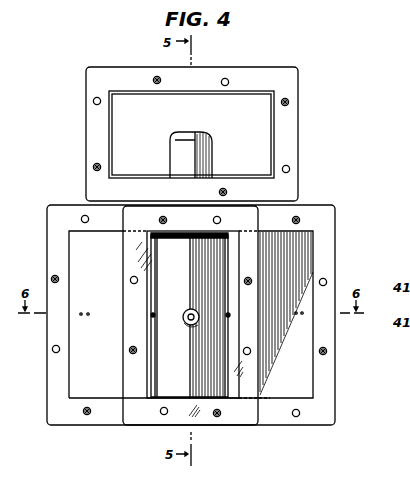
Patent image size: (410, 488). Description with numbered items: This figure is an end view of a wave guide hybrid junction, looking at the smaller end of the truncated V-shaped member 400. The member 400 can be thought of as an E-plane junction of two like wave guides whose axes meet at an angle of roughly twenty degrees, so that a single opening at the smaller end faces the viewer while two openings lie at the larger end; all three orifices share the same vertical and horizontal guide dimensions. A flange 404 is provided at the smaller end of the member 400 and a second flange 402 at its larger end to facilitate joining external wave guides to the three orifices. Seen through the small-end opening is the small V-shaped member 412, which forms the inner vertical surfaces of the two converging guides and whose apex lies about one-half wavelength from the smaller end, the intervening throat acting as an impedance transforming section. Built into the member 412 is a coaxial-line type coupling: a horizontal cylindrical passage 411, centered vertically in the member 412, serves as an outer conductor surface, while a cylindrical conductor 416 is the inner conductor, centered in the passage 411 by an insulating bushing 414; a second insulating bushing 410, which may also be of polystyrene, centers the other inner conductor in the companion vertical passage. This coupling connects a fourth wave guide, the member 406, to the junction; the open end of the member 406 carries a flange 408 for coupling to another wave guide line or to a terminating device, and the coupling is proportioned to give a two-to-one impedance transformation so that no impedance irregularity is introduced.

The truncated V-shaped member 400 is at (303, 243).
The second flange 402 is at (336, 260).
The flange 404 is at (258, 405).
The member 406 is at (248, 91).
The flange 408 is at (299, 106).
The insulating bushing 410 is at (212, 149).
The horizontal cylindrical passage 411 is at (183, 318).
The small V-shaped member 412 is at (190, 258).
The insulating bushing 414 is at (184, 311).
The cylindrical conductor 416 is at (188, 324).